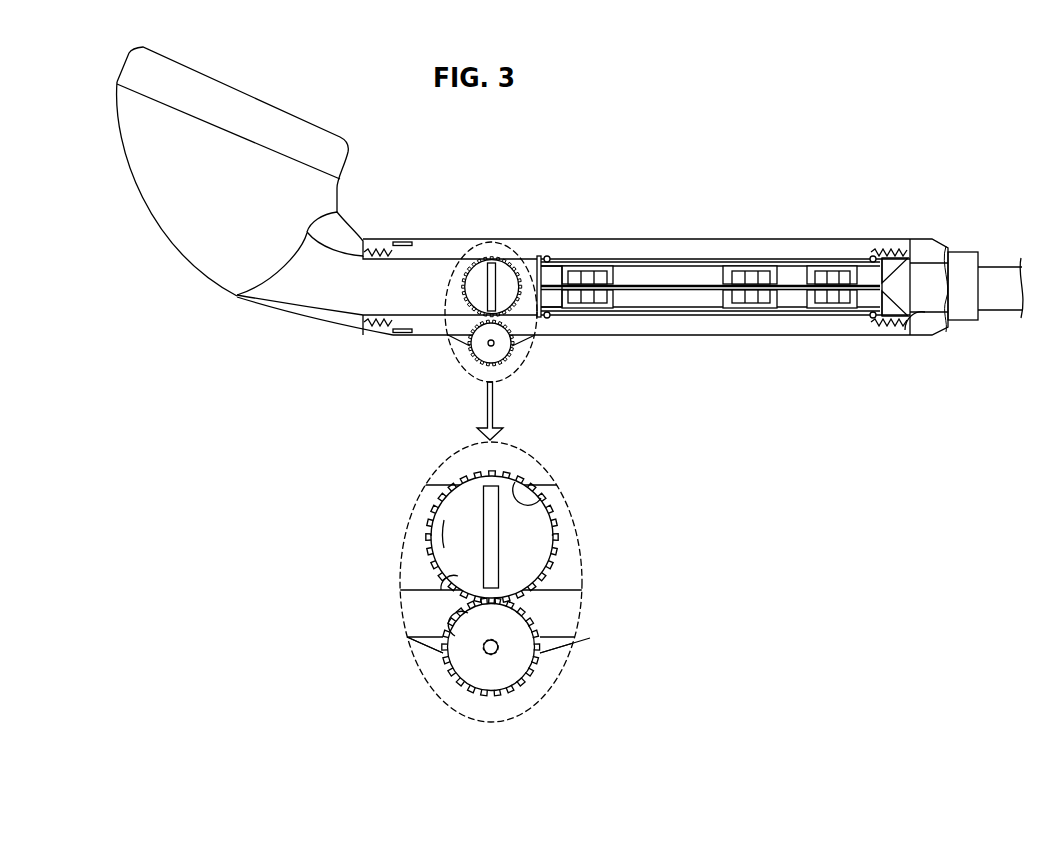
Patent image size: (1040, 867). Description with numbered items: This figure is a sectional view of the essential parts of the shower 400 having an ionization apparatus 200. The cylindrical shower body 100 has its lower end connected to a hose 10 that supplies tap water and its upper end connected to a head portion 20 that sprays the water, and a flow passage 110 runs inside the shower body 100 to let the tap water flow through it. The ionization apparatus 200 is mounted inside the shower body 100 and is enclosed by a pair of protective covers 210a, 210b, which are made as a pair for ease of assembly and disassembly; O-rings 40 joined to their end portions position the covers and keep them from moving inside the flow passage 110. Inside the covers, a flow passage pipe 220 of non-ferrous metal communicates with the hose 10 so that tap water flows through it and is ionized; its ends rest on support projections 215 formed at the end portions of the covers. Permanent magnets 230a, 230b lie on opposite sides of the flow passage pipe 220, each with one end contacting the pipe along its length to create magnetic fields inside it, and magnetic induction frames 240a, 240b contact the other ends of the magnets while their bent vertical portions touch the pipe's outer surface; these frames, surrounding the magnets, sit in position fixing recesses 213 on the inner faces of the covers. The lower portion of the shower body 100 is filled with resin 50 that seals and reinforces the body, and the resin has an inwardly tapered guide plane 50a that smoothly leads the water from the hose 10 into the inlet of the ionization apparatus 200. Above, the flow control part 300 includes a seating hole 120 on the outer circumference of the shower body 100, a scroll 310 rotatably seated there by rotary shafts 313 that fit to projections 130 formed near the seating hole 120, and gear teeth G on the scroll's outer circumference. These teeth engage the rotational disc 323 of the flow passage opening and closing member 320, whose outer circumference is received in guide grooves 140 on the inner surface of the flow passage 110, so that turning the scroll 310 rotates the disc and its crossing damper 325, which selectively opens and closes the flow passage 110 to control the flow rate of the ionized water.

The shower 400 is at (637, 96).
The head portion 20 is at (170, 207).
The hose 10 is at (962, 262).
The shower body 100 is at (825, 241).
The flow passage 110 is at (373, 273).
The seating hole 120 is at (420, 637).
The projection 130 is at (498, 642).
The guide groove 140 is at (537, 492).
The ionization apparatus 200 is at (628, 258).
The protective cover 210a is at (788, 266).
The protective cover 210b is at (790, 312).
The position fixing recess 213 is at (745, 305).
The support projection 215 is at (560, 268).
The flow passage pipe 220 is at (710, 285).
The permanent magnet 230a is at (670, 275).
The permanent magnet 230b is at (670, 303).
The magnetic induction frame 240a is at (588, 268).
The magnetic induction frame 240b is at (585, 305).
The O-ring 40 is at (873, 322).
The resin 50 is at (888, 262).
The guide plane 50a is at (905, 330).
The flow control part 300 is at (568, 566).
The scroll 310 is at (525, 662).
The rotary shaft 313 is at (493, 654).
The flow passage opening and closing member 320 is at (557, 521).
The rotational disc 323 is at (447, 534).
The damper 325 is at (486, 558).
The gear teeth G is at (423, 500).